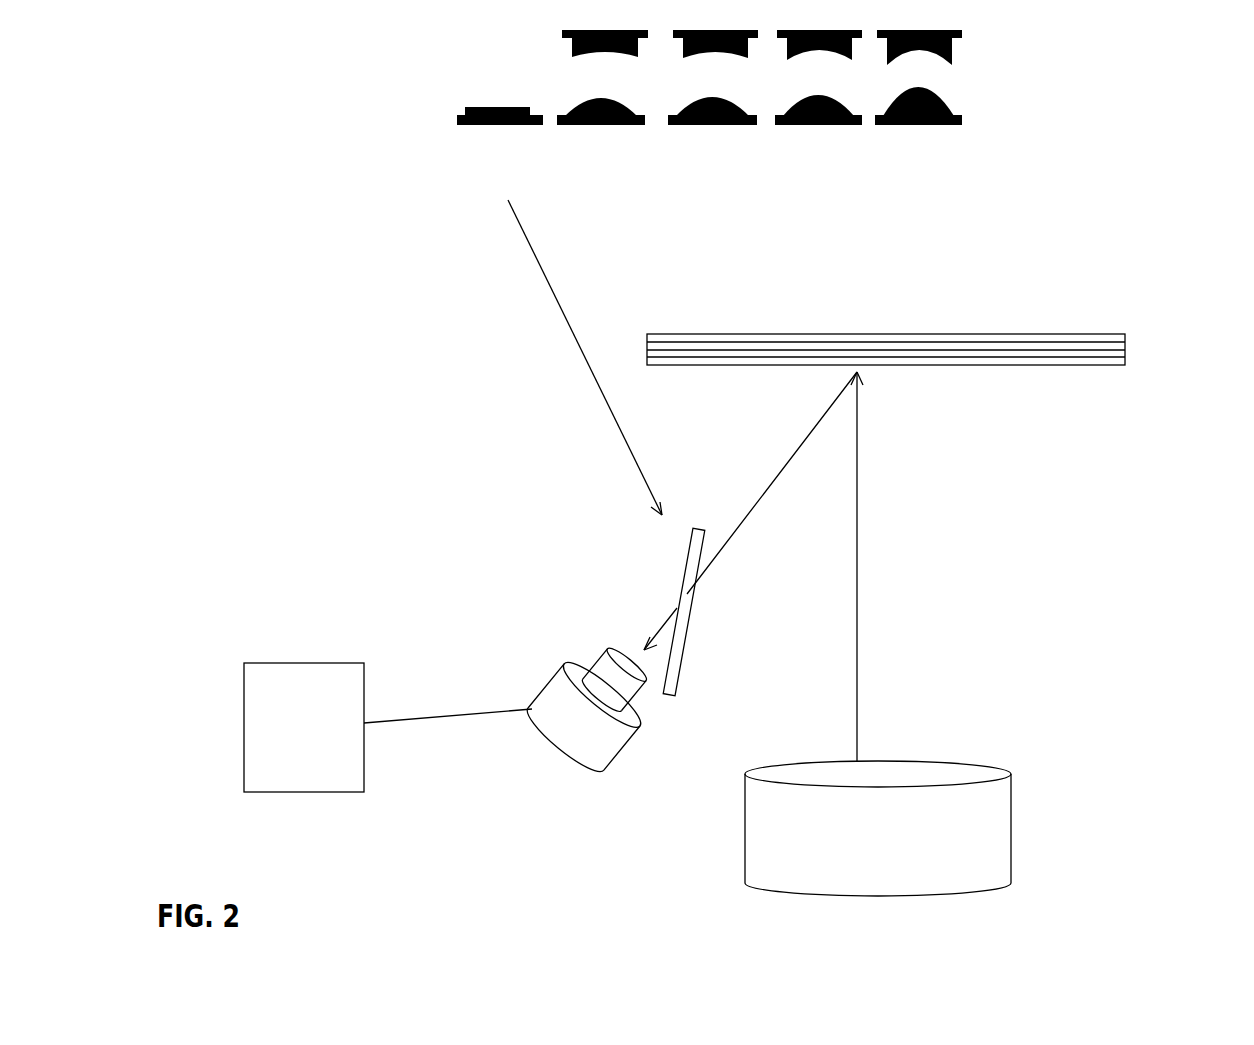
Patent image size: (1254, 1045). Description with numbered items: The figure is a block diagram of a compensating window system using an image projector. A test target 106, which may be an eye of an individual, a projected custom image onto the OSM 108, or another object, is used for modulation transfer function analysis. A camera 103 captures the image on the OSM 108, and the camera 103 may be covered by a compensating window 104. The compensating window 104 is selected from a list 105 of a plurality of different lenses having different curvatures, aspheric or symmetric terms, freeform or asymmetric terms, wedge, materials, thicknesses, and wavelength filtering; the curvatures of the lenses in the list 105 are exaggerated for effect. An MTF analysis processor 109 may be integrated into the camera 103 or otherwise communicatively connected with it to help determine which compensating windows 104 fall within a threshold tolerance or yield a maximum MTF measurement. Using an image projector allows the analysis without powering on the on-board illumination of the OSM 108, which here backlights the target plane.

The camera 103 is at (582, 762).
The compensating window 104 is at (670, 578).
The list 105 is at (368, 124).
The test target 106 is at (983, 890).
The OSM 108 is at (1093, 365).
The MTF analysis processor 109 is at (322, 739).